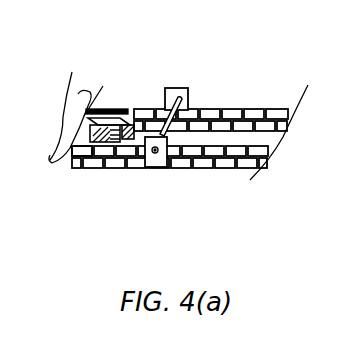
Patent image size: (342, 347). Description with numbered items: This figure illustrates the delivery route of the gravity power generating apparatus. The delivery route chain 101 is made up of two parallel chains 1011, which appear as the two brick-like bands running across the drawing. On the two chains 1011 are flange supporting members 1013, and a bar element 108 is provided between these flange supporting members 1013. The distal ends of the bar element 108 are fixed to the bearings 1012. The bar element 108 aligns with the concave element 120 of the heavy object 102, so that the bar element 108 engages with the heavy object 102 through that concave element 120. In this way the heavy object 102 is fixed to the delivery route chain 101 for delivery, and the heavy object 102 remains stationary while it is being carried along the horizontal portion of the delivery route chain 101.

The delivery route chain 101 is at (76, 107).
The heavy object 102 is at (100, 110).
The bar element 108 is at (165, 132).
The concave element 120 is at (84, 148).
The chains 1011 is at (219, 121).
The bearings 1012 is at (155, 153).
The flange supporting members 1013 is at (168, 94).